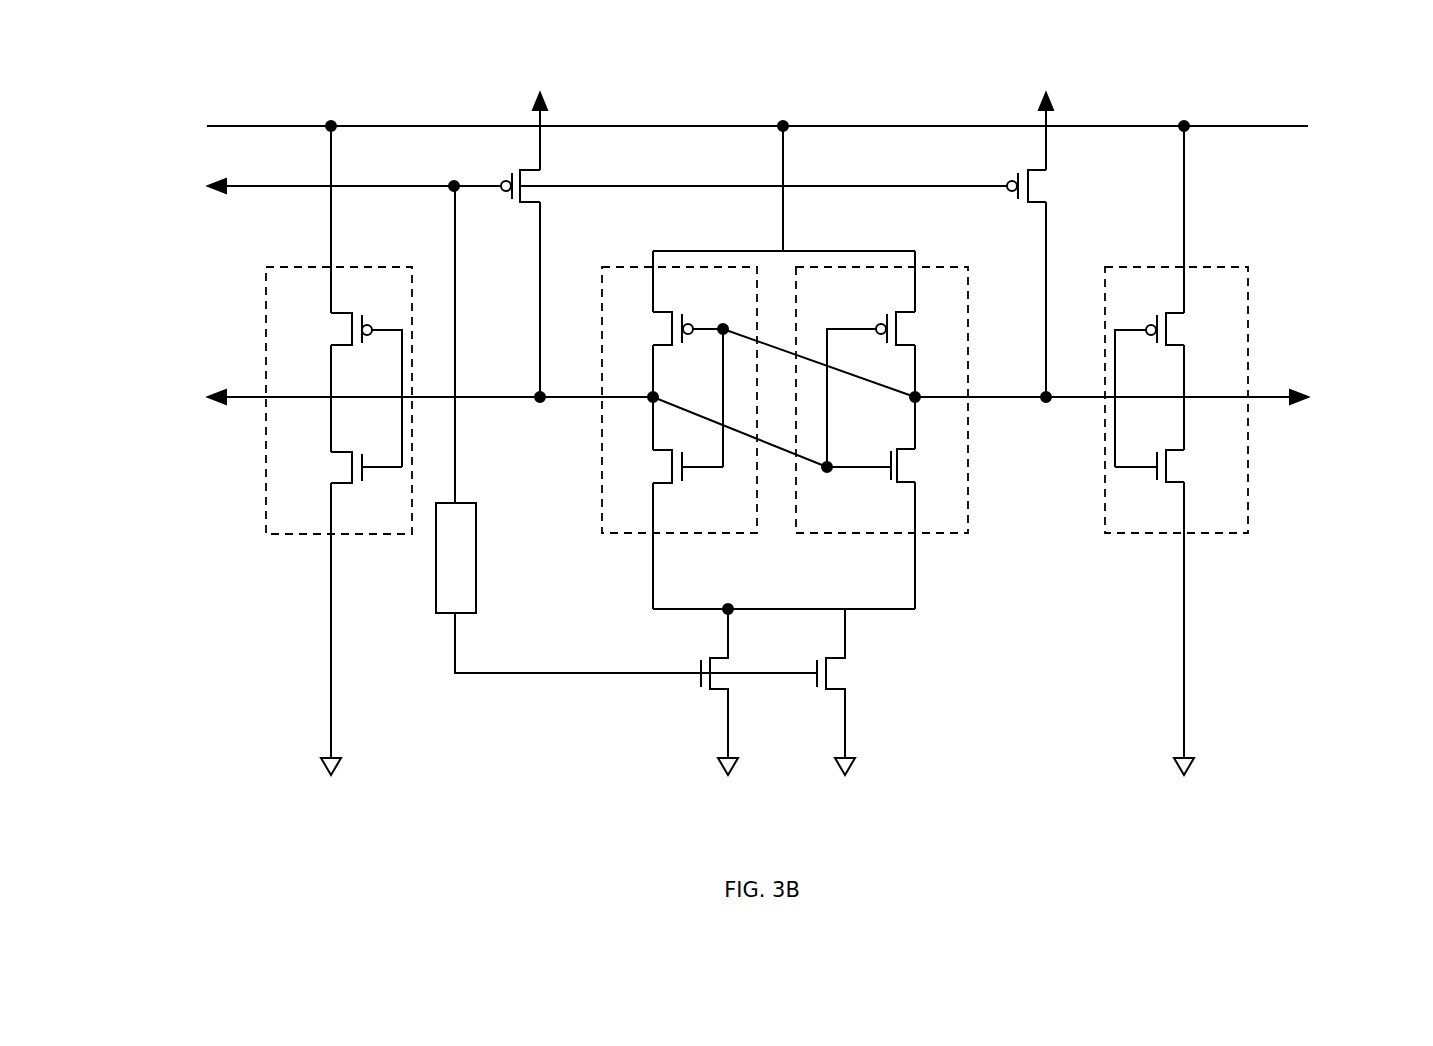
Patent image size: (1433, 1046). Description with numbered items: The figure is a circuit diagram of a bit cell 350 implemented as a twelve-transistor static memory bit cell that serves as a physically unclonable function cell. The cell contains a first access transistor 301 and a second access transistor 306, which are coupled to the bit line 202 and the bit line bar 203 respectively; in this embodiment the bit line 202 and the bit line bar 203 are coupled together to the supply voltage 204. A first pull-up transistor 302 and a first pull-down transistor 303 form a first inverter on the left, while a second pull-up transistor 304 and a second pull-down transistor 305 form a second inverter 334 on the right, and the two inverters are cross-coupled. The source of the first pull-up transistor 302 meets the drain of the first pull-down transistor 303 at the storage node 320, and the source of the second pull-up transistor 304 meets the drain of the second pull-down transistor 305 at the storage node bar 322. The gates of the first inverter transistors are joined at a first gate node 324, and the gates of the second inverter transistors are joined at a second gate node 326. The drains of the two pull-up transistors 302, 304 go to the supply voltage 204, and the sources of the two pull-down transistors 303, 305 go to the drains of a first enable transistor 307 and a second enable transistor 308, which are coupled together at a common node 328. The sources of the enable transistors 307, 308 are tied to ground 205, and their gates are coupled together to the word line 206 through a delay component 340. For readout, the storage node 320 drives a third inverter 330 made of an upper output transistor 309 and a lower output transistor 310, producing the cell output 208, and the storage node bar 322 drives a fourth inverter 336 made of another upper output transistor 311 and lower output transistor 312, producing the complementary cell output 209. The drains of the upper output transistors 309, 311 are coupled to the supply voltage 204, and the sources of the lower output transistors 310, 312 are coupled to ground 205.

The bit cell 350 is at (153, 73).
The BL 202 is at (540, 216).
The BLB 203 is at (1046, 216).
The VDD 204 is at (908, 126).
The GND 205 is at (757, 795).
The WL 206 is at (584, 188).
The PUF output 208 is at (368, 401).
The PUF output bar 209 is at (1174, 398).
The transistor M1 301 is at (532, 187).
The transistor M2 302 is at (660, 332).
The transistor M3 303 is at (665, 467).
The transistor M4 304 is at (911, 332).
The transistor M5 305 is at (895, 467).
The transistor M6 306 is at (1039, 187).
The transistor M7 307 is at (688, 683).
The transistor M8 308 is at (845, 683).
The transistor M9 309 is at (340, 376).
The transistor M10 310 is at (341, 467).
The transistor M11 311 is at (1175, 375).
The transistor M12 312 is at (1175, 466).
The storage node 320 is at (540, 427).
The storage node bar 322 is at (625, 267).
The node Q 324 is at (804, 369).
The node Q# 326 is at (764, 428).
The node 328 is at (728, 607).
The third inverter 330 is at (305, 267).
The second inverter 334 is at (948, 267).
The fourth inverter 336 is at (1228, 267).
The delay component 340 is at (478, 555).